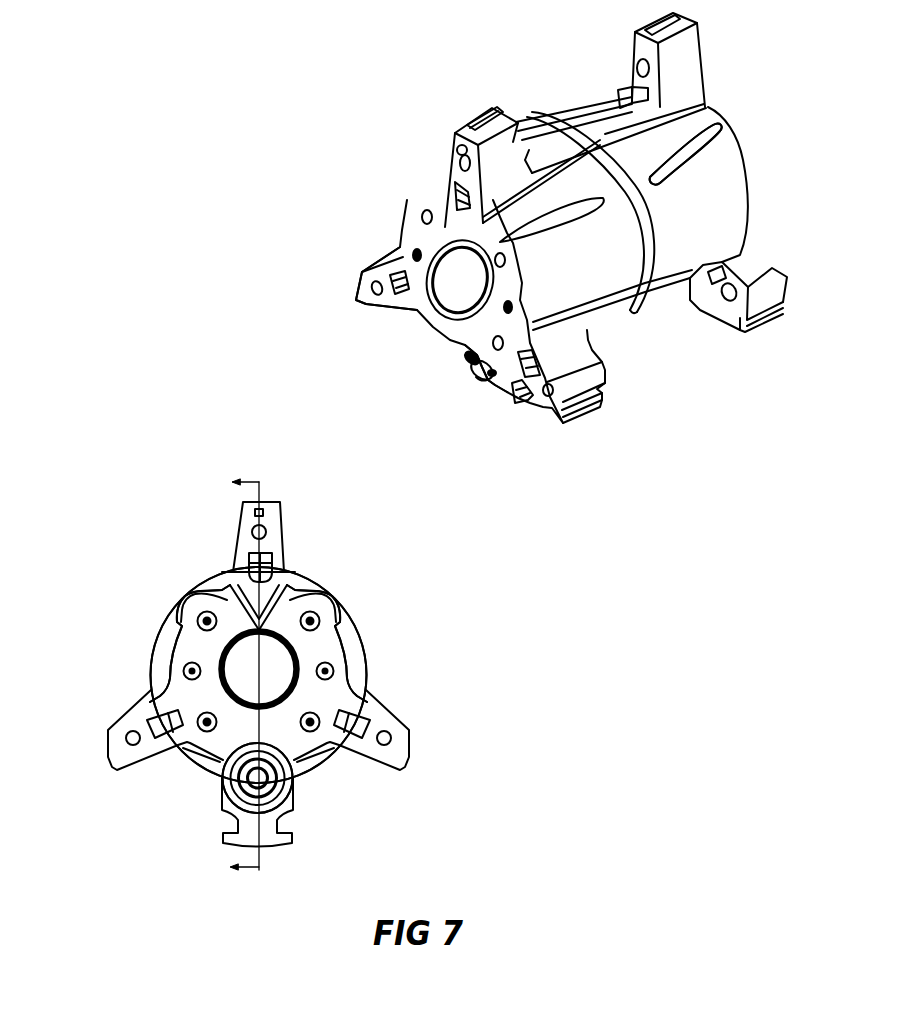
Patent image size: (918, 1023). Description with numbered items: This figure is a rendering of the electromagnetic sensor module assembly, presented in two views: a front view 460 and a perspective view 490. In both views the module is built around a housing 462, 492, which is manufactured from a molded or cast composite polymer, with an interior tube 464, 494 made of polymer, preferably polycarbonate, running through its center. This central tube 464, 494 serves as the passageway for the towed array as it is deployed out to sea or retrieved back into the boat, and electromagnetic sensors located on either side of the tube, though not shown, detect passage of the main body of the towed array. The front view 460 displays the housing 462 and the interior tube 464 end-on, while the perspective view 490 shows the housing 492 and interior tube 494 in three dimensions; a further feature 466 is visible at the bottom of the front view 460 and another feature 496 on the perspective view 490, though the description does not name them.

The perspective view 490 is at (380, 123).
The housing 492 is at (717, 197).
The interior tube 494 is at (400, 252).
The lower boss 496 is at (457, 360).
The front view 460 is at (145, 549).
The housing 462 is at (353, 632).
The interior tube 464 is at (297, 700).
The bottom boss 466 is at (290, 791).